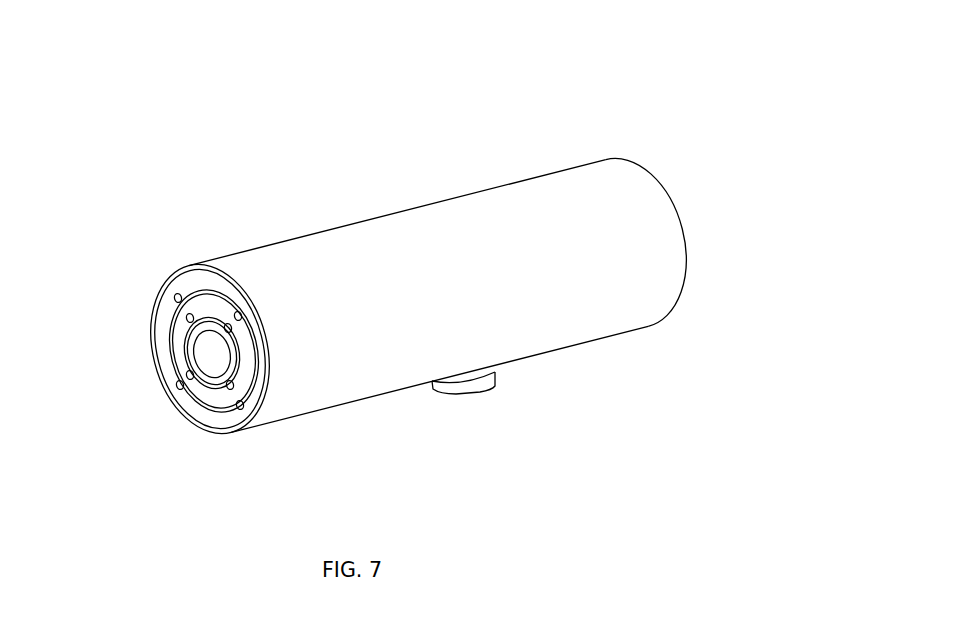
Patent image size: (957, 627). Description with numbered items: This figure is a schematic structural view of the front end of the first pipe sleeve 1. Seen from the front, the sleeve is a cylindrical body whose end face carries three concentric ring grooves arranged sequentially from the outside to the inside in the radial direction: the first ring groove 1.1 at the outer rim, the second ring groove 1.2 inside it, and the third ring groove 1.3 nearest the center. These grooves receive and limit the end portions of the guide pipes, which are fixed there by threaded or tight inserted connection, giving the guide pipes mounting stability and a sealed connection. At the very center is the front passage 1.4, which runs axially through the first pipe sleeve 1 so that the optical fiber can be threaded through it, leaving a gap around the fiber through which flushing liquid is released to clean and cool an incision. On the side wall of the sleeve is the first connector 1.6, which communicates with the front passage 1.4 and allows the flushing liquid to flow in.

The first pipe sleeve 1 is at (343, 248).
The first ring groove 1.1 is at (192, 278).
The second ring groove 1.2 is at (210, 300).
The third ring groove 1.3 is at (197, 323).
The front passage 1.4 is at (212, 363).
The first connector 1.6 is at (473, 392).